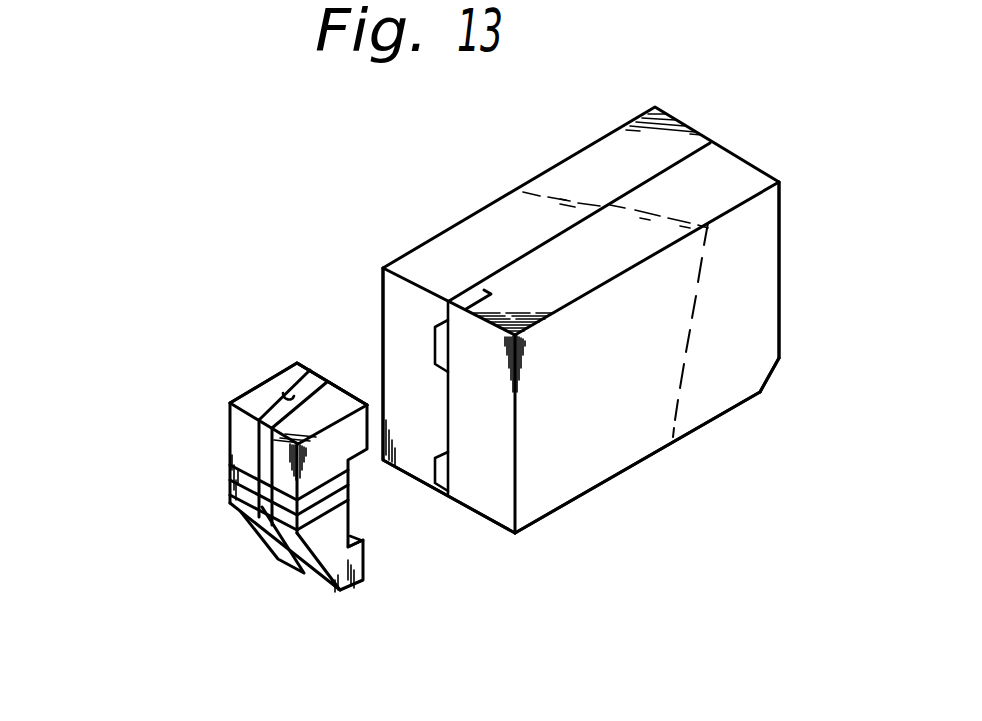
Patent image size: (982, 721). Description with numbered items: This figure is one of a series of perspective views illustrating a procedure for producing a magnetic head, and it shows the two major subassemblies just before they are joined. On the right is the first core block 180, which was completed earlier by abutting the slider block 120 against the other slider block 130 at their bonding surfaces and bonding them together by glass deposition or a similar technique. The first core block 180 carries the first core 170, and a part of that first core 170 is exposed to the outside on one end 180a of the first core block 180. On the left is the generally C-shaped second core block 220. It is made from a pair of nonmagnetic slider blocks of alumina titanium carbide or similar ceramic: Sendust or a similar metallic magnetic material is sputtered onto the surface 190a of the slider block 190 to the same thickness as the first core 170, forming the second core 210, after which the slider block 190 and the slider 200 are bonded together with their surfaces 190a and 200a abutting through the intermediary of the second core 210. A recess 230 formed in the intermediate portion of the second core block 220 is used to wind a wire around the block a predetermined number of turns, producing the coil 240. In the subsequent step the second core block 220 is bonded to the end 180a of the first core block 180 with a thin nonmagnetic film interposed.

The slider block 120 is at (522, 188).
The slider block 130 is at (742, 404).
The first core 170 is at (427, 324).
The first core block 180 is at (688, 452).
The end of first core block 180a is at (487, 486).
The slider block 190 is at (267, 397).
The surface of slider block 190a is at (287, 400).
The slider 200 is at (348, 443).
The surface of slider 200a is at (327, 385).
The second core 210 is at (307, 372).
The second core block 220 is at (218, 416).
The recess 230 is at (355, 517).
The coil 240 is at (228, 480).